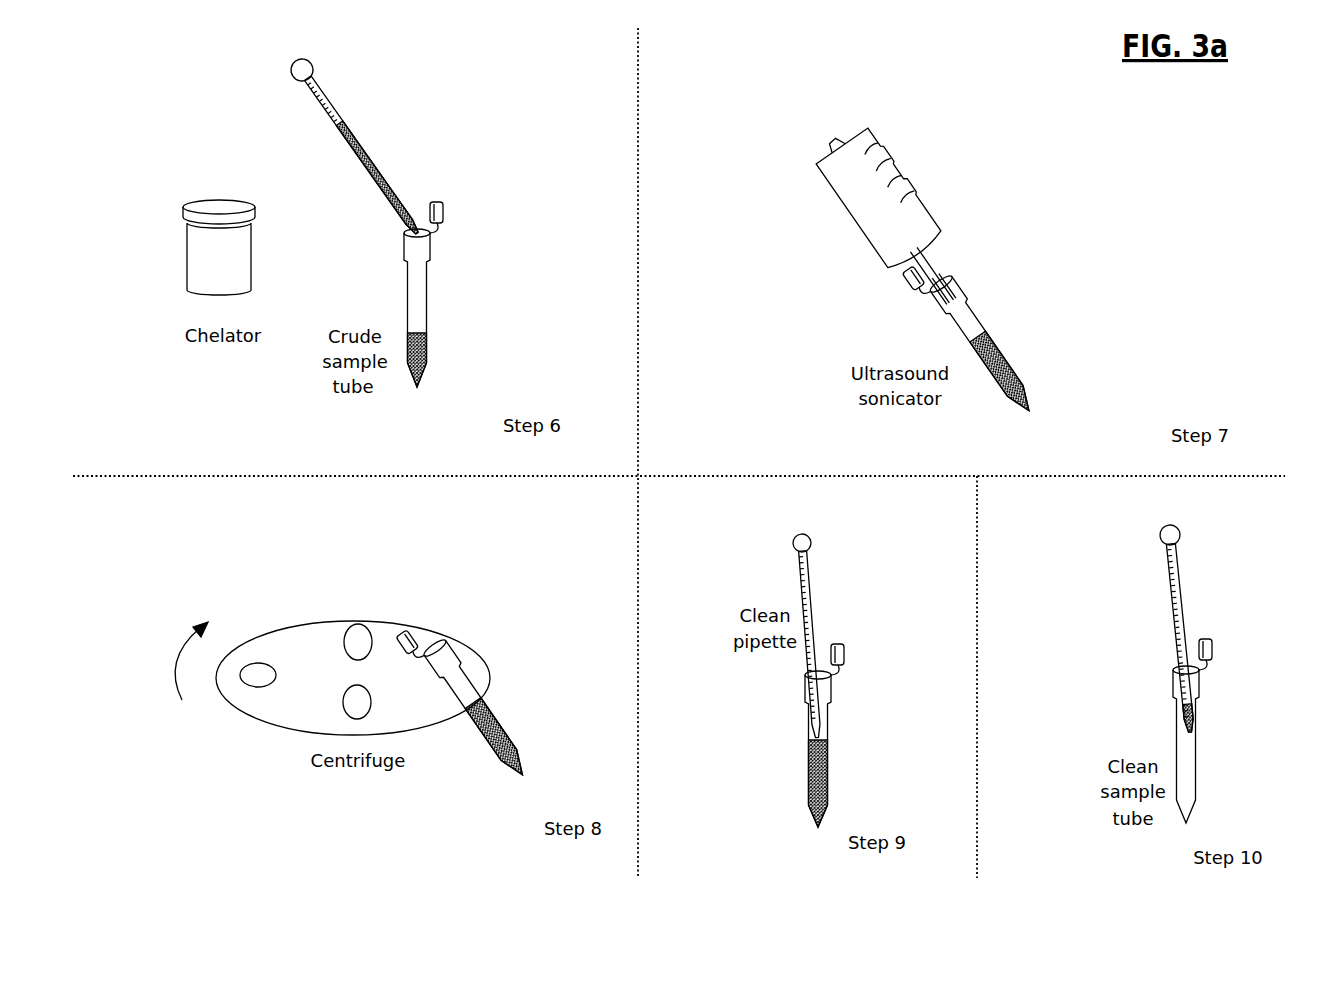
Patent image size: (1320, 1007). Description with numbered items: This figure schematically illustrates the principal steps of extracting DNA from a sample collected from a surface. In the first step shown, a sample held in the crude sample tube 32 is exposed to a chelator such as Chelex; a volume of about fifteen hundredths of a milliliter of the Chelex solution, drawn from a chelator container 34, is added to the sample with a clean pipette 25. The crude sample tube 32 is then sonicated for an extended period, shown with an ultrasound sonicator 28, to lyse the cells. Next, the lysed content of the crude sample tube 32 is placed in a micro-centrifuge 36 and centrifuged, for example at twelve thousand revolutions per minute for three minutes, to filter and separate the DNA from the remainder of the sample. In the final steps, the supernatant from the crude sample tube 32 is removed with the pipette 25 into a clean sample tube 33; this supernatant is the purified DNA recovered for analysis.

The clean pipette 25 is at (330, 118).
The ultrasound sonicator 28 is at (880, 230).
The crude sample tube 32 is at (410, 272).
The clean sample tube 33 is at (1188, 770).
The chelator 34 is at (219, 247).
The micro-centrifuge 36 is at (277, 715).